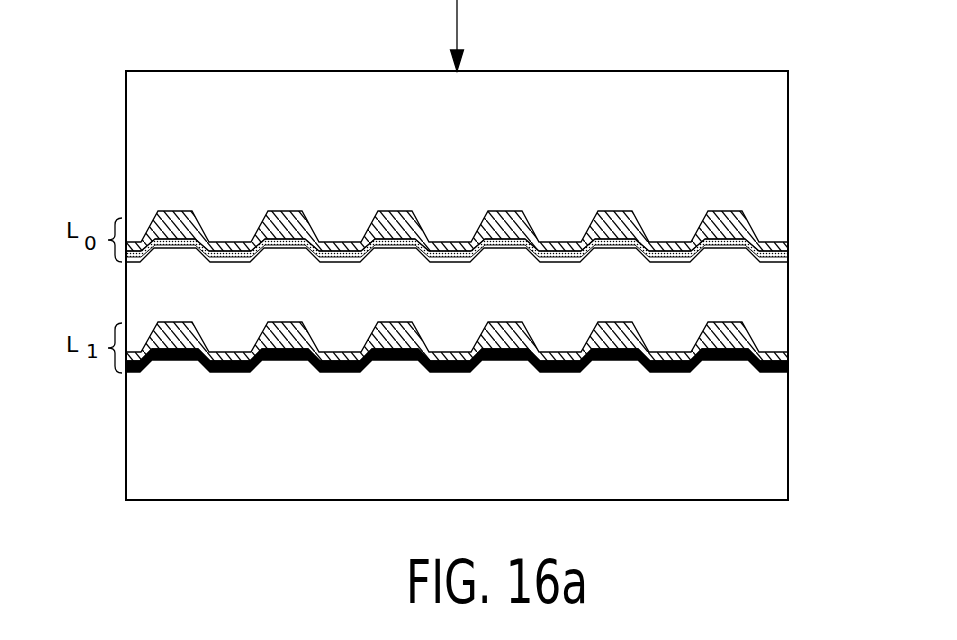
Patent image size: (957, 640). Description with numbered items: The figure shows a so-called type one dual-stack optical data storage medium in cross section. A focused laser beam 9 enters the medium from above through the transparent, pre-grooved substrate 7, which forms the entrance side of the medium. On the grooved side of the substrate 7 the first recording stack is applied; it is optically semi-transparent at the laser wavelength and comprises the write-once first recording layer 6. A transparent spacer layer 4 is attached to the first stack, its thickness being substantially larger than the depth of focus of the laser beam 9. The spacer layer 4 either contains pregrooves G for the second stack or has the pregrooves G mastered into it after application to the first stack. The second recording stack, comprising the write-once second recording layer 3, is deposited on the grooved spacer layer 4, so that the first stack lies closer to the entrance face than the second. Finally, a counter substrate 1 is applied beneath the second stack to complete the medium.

The counter substrate 1 is at (763, 457).
The L1 recording layer 3 is at (775, 358).
The transparent spacer layer 4 is at (767, 298).
The L0 recording layer 6 is at (775, 250).
The substrate 7 is at (767, 137).
The focused laser beam 9 is at (457, 13).
The pregrooves G is at (622, 314).